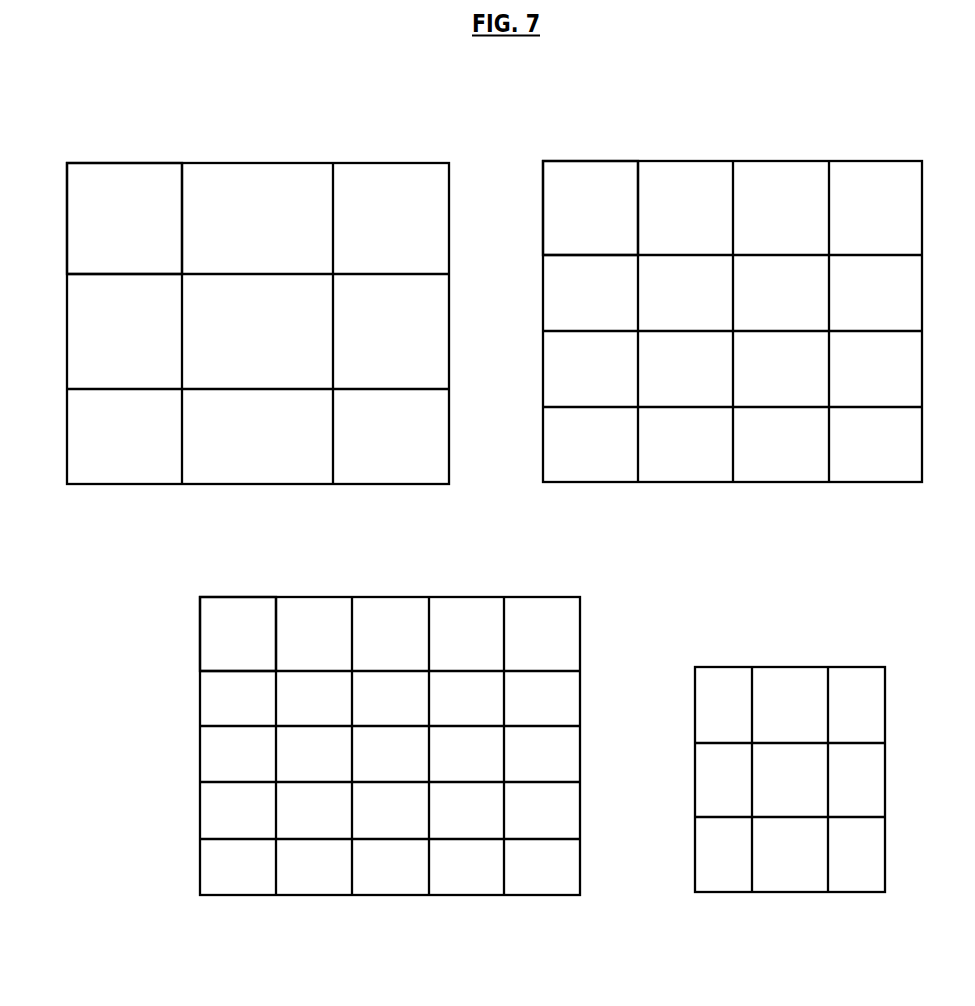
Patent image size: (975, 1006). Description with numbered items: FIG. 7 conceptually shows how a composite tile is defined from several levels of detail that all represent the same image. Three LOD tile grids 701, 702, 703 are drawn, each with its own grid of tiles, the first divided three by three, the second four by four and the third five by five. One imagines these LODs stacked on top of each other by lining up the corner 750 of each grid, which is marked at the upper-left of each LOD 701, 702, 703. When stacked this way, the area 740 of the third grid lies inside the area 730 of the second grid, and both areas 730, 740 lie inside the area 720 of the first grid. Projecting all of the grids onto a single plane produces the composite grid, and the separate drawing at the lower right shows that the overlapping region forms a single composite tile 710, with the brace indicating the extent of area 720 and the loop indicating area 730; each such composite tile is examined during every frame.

The level of detail tile grid 701 is at (258, 289).
The level of detail tile grid 702 is at (732, 287).
The level of detail tile grid 703 is at (390, 721).
The composite tile 710 is at (713, 705).
The area 720 is at (902, 893).
The area 730 is at (667, 931).
The area 740 is at (238, 634).
The corner 750 is at (68, 163).